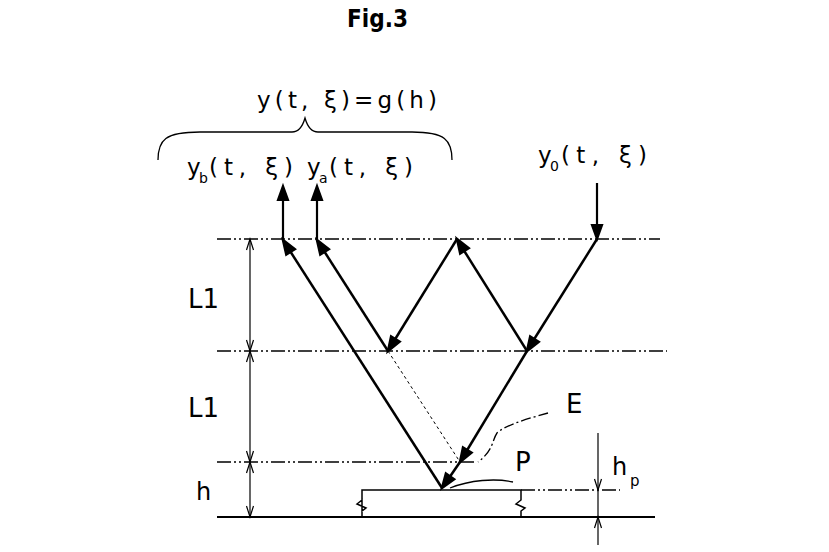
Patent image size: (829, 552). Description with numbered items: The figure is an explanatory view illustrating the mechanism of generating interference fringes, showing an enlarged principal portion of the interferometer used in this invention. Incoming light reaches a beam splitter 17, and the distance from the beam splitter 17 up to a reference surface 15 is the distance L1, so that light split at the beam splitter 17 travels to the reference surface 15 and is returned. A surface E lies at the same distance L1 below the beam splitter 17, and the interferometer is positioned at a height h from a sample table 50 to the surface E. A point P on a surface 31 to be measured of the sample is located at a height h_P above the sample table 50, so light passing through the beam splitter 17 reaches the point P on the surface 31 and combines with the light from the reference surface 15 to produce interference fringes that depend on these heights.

The reference surface 15 is at (660, 239).
The beam splitter 17 is at (667, 351).
The surface to be measured 31 is at (382, 490).
The sample table 50 is at (642, 517).